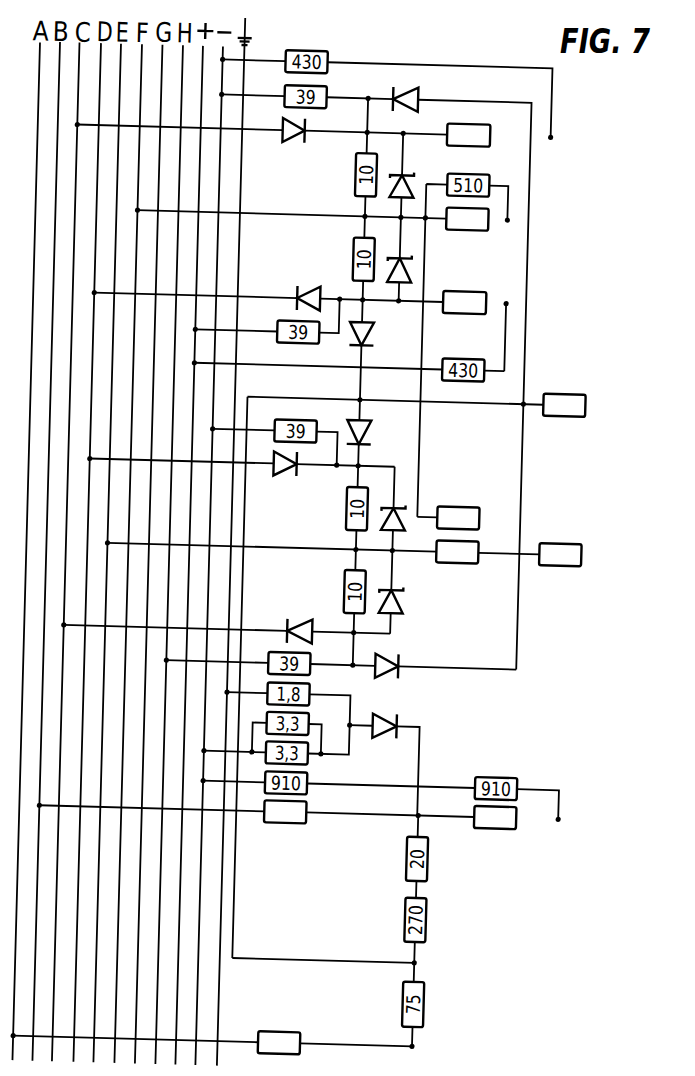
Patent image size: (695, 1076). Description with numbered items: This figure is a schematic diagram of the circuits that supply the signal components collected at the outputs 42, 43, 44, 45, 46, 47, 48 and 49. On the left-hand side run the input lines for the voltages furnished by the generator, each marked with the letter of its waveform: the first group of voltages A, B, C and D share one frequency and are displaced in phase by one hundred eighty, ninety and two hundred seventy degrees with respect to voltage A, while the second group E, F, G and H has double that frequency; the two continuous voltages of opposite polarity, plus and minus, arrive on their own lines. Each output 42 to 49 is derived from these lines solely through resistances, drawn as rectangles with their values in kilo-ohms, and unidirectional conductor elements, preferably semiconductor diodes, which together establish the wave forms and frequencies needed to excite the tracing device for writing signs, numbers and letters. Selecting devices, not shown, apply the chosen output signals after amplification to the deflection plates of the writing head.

The signal component output 42 is at (492, 129).
The signal component output 43 is at (493, 213).
The signal component output 44 is at (493, 296).
The signal component output 45 is at (645, 396).
The signal component output 46 is at (492, 512).
The signal component output 47 is at (645, 546).
The signal component output 48 is at (537, 810).
The signal component output 49 is at (439, 1042).